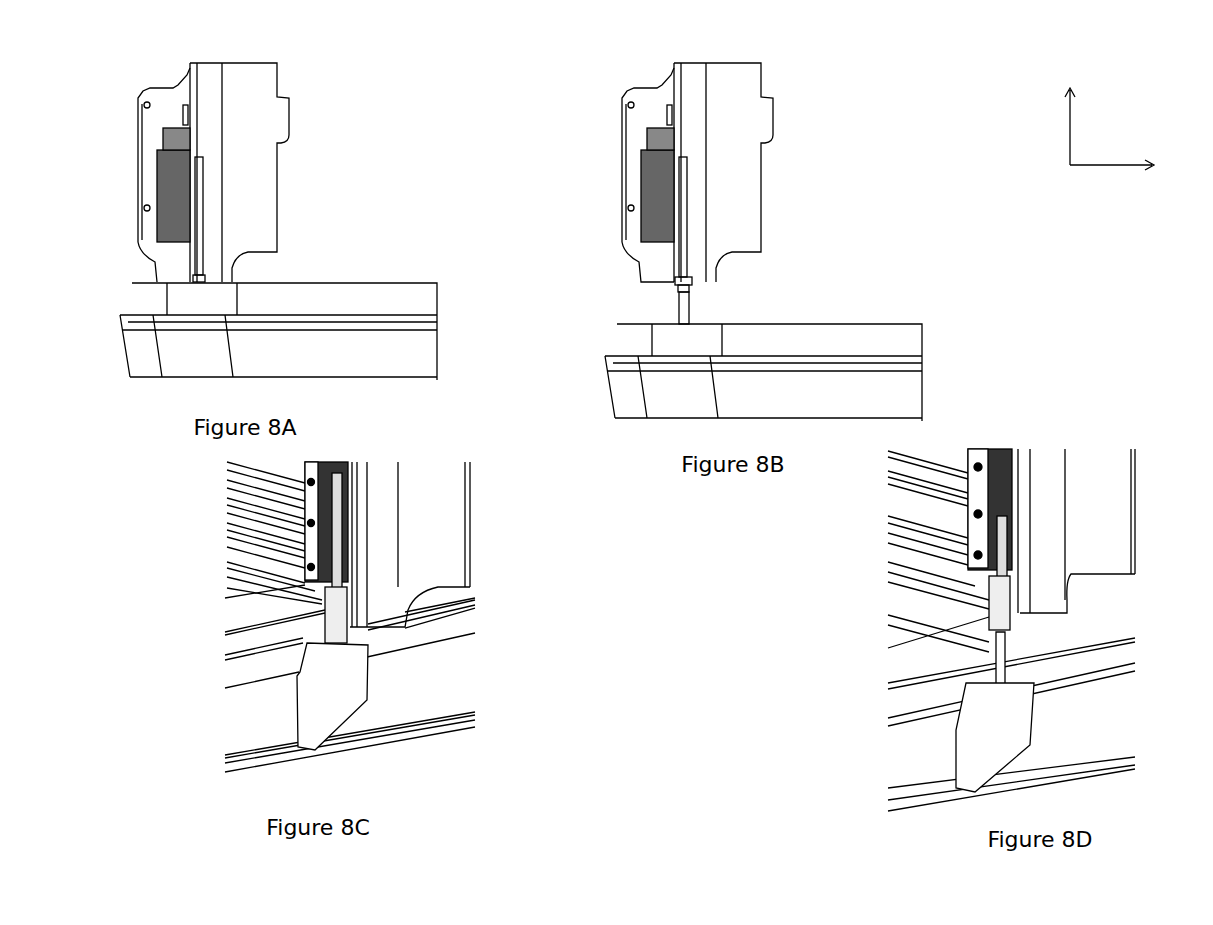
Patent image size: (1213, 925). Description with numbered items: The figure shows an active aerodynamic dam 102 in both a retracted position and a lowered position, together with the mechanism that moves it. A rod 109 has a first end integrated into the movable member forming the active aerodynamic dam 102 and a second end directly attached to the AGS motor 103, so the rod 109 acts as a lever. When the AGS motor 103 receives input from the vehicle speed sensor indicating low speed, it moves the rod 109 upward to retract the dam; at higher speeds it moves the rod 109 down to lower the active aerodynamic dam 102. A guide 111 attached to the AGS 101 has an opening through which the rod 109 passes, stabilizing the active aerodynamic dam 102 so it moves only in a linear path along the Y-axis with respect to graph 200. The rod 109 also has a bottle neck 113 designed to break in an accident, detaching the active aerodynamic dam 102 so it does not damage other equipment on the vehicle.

In FIG. 8A, the AGS 101 is at (245, 140).
In FIG. 8B, the AGS 101 is at (715, 142).
In FIG. 8C, the AGS 101 is at (435, 520).
In FIG. 8D, the AGS 101 is at (1043, 461).
In FIG. 8A, the active aerodynamic dam 102 is at (375, 302).
In FIG. 8B, the active aerodynamic dam 102 is at (850, 334).
In FIG. 8C, the active aerodynamic dam 102 is at (253, 705).
In FIG. 8D, the active aerodynamic dam 102 is at (929, 716).
In FIG. 8A, the AGS motor 103 is at (175, 165).
In FIG. 8B, the AGS motor 103 is at (645, 168).
In FIG. 8C, the AGS motor 103 is at (310, 505).
In FIG. 8D, the AGS motor 103 is at (888, 518).
In FIG. 8A, the rod 109 is at (200, 238).
In FIG. 8B, the rod 109 is at (684, 237).
In FIG. 8C, the rod 109 is at (342, 572).
In FIG. 8D, the rod 109 is at (993, 662).
In FIG. 8C, the guide 111 is at (338, 610).
In FIG. 8D, the guide 111 is at (1001, 603).
In FIG. 8A, the bottle neck 113 is at (200, 252).
In FIG. 8B, the bottle neck 113 is at (677, 290).
In FIG. 8D, the bottle neck 113 is at (1012, 632).
In FIG. 8B, the graph 200 is at (1123, 131).